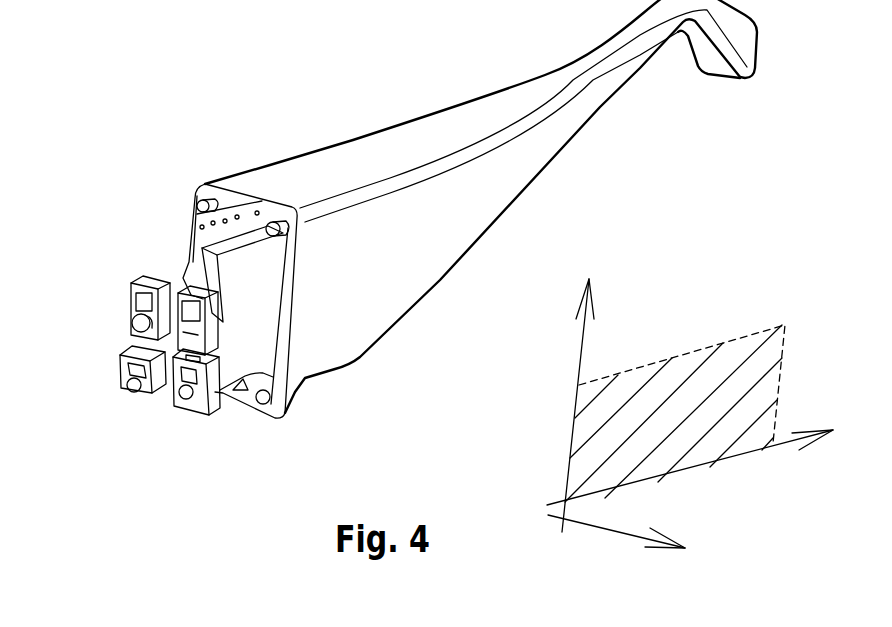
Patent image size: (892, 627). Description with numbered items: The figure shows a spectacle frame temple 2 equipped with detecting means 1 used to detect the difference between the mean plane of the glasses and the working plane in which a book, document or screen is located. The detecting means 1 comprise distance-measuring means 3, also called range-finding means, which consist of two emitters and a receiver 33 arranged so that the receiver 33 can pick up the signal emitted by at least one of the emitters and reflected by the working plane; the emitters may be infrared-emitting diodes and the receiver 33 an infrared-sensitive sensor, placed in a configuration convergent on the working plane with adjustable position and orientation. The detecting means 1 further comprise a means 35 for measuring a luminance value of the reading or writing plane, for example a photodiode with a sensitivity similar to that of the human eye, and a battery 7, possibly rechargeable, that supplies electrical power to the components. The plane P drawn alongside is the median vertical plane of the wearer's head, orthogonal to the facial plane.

The detecting means 1 is at (234, 349).
The temple 2 is at (541, 137).
The distance-measuring means 3 is at (111, 283).
The battery 7 is at (243, 262).
The receiver 33 is at (130, 312).
The luminance-measuring means 35 is at (219, 325).
The median vertical plane P is at (778, 342).